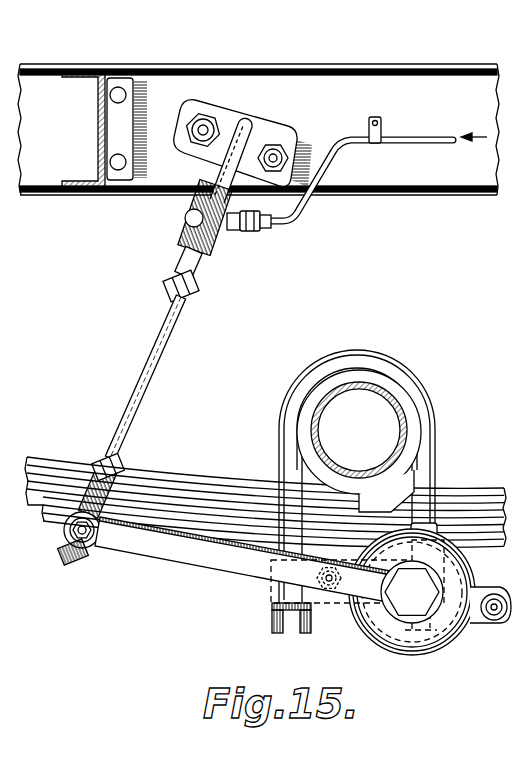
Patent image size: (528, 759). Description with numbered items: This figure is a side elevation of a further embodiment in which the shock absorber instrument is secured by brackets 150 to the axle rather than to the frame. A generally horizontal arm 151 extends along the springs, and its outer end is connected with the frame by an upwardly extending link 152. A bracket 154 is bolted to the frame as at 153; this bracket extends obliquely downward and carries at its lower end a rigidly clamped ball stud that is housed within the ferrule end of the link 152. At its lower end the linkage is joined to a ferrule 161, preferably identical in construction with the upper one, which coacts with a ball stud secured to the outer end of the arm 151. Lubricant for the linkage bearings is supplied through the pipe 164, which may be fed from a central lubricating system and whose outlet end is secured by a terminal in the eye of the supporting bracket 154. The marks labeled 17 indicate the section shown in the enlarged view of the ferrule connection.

The brackets 150 is at (335, 598).
The arm 151 is at (212, 558).
The link 152 is at (157, 363).
The bolt 153 is at (205, 120).
The bracket 154 is at (210, 172).
The ferrule 161 is at (96, 461).
The pipe 164 is at (332, 150).
The section line indicator 17 is at (222, 178).